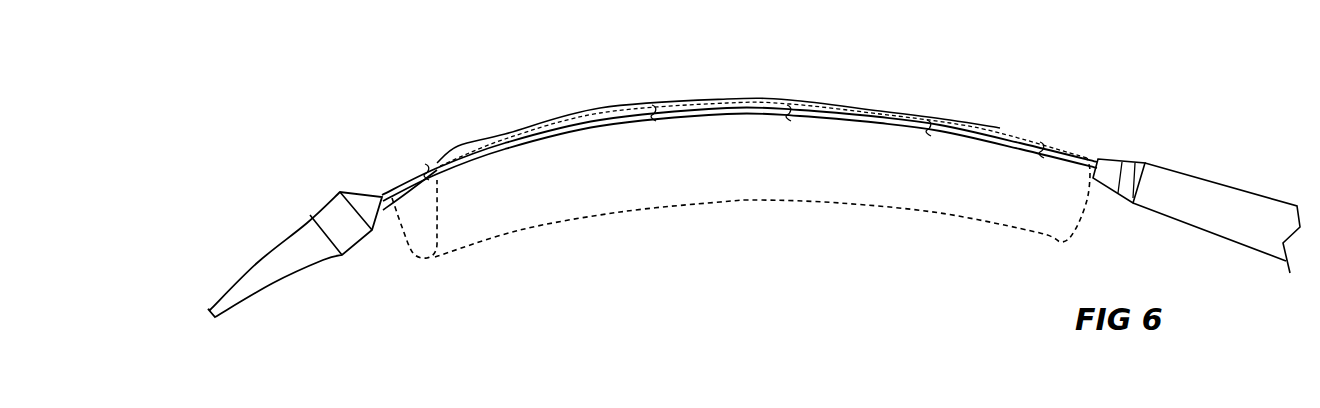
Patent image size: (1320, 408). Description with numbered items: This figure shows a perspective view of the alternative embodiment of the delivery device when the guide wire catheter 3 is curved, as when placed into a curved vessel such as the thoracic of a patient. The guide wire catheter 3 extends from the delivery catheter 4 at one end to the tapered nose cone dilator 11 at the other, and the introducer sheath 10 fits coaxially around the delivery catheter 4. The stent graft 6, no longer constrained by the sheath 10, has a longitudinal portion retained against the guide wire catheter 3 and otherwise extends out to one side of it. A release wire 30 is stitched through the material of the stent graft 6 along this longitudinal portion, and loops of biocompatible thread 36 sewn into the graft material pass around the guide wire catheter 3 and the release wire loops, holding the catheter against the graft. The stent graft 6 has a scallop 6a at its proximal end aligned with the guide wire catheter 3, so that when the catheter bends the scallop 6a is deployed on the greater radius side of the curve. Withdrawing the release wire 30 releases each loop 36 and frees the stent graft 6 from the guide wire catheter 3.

The guide wire catheter 3 is at (882, 120).
The delivery catheter 4 is at (1115, 180).
The stent graft 6 is at (735, 200).
The scallop 6a is at (418, 173).
The introducer sheath 10 is at (1245, 222).
The nose cone dilator 11 is at (303, 250).
The release wire 30 is at (743, 98).
The loops of biocompatible thread 36 is at (793, 110).